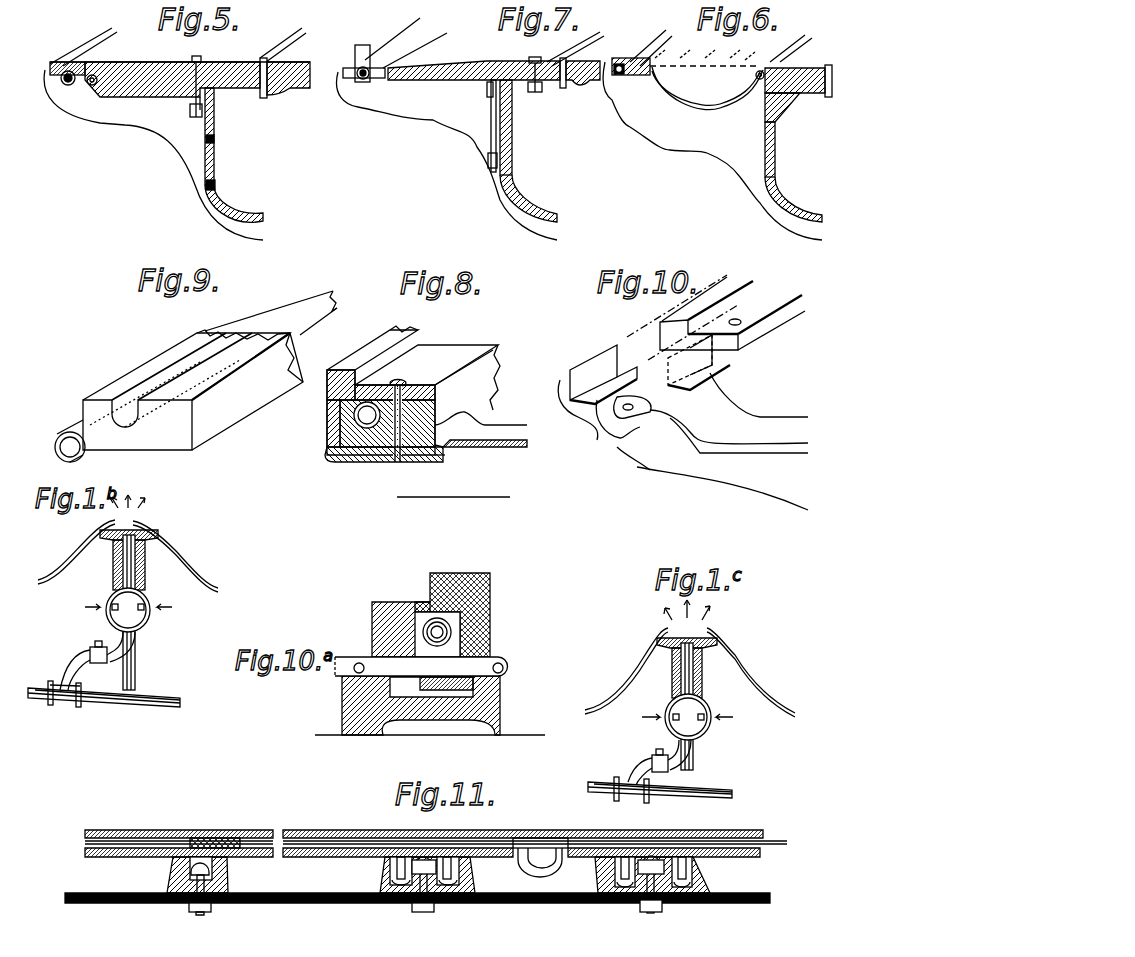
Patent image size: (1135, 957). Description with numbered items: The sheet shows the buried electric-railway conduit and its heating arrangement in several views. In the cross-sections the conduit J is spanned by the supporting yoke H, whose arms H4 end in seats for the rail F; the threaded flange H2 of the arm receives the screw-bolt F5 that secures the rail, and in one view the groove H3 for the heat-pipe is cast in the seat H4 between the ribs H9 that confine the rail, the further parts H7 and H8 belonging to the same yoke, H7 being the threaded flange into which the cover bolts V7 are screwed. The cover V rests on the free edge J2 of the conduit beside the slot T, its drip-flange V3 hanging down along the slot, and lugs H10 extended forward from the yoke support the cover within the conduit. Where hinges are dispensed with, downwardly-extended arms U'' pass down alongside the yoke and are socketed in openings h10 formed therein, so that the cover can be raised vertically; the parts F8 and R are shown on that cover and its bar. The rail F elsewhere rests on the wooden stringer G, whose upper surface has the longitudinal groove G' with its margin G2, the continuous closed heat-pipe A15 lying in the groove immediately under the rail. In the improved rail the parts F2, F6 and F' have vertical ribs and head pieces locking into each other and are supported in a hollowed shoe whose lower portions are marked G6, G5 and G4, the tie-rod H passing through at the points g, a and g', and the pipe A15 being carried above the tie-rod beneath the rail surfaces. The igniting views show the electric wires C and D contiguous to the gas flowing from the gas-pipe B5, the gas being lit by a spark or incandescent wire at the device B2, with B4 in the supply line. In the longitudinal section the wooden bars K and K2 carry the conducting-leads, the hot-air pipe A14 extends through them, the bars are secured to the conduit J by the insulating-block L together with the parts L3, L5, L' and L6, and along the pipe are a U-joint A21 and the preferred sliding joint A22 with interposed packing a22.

In FIG. 5, the rail F is at (83, 45).
In FIG. 6, the rail F is at (651, 47).
In FIG. 10, the rail F is at (716, 317).
In FIG. 10A, the rail F is at (452, 604).
In FIG. 5, the downwardly-extended arms U'' is at (180, 68).
In FIG. 7, the downwardly-extended arms U'' is at (462, 145).
In FIG. 5, the cover bolt V7 is at (206, 74).
In FIG. 7, the cover bolt V7 is at (538, 63).
In FIG. 5, the conduit cover V is at (240, 48).
In FIG. 7, the conduit cover V is at (575, 43).
In FIG. 6, the conduit cover V is at (794, 66).
In FIG. 5, the slot T is at (285, 60).
In FIG. 7, the slot T is at (605, 20).
In FIG. 5, the groove H3 is at (62, 76).
In FIG. 7, the groove H3 is at (370, 85).
In FIG. 10, the groove H3 is at (605, 432).
In FIG. 5, the heat-pipe A15 is at (67, 84).
In FIG. 7, the heat-pipe A15 is at (358, 85).
In FIG. 6, the heat-pipe A15 is at (618, 78).
In FIG. 9, the heat-pipe A15 is at (320, 302).
In FIG. 8, the heat-pipe A15 is at (360, 455).
In FIG. 10A, the heat-pipe A15 is at (440, 630).
In FIG. 5, the threaded flange H7 is at (184, 110).
In FIG. 5, the stud / arm H8 is at (203, 147).
In FIG. 10, the stud / arm H8 is at (729, 413).
In FIG. 5, the free edge of conduit J2 is at (212, 90).
In FIG. 6, the free edge of conduit J2 is at (766, 100).
In FIG. 5, the drip-flange V3 is at (268, 98).
In FIG. 7, the drip-flange V3 is at (572, 88).
In FIG. 6, the drip-flange V3 is at (805, 98).
In FIG. 5, the conduit-yoke H is at (153, 155).
In FIG. 7, the conduit-yoke H is at (430, 128).
In FIG. 6, the conduit-yoke H is at (712, 151).
In FIG. 10, the conduit-yoke H is at (722, 488).
In FIG. 10A, the conduit-yoke H is at (510, 664).
In FIG. 7, the handle F8 is at (395, 50).
In FIG. 7, the rail bar R is at (474, 61).
In FIG. 6, the rail bar R is at (706, 79).
In FIG. 7, the socket openings h10 is at (487, 92).
In FIG. 7, the lugs H10 is at (512, 90).
In FIG. 6, the lugs H10 is at (788, 115).
In FIG. 6, the rail part F6 is at (612, 72).
In FIG. 10A, the rail part F6 is at (443, 630).
In FIG. 6, the yoke arm H4 is at (645, 78).
In FIG. 8, the yoke arm H4 is at (497, 429).
In FIG. 10, the yoke arm H4 is at (570, 403).
In FIG. 6, the conduit J is at (793, 172).
In FIG. 11, the conduit J is at (424, 909).
In FIG. 9, the stringer G is at (193, 390).
In FIG. 8, the stringer G is at (413, 390).
In FIG. 9, the groove G2 is at (190, 372).
In FIG. 8, the groove G2 is at (345, 407).
In FIG. 9, the longitudinal groove G' is at (155, 463).
In FIG. 8, the longitudinal groove G' is at (292, 445).
In FIG. 8, the screw-bolt F5 is at (402, 380).
In FIG. 8, the ribs H9 is at (322, 445).
In FIG. 10, the ribs H9 is at (585, 363).
In FIG. 8, the threaded flange H2 is at (390, 462).
In FIG. 10, the threaded flange H2 is at (640, 460).
In FIG. 1B, the electric wire C is at (35, 565).
In FIG. 10A, the electric wire C is at (562, 711).
In FIG. 1B, the electric wire D is at (142, 558).
In FIG. 1C, the electric wire D is at (700, 680).
In FIG. 1B, the ventilator B2 is at (145, 596).
In FIG. 1C, the ventilator B2 is at (702, 692).
In FIG. 1B, the valve B4 is at (90, 650).
In FIG. 1C, the valve B4 is at (652, 757).
In FIG. 1B, the gas-pipe B5 is at (160, 692).
In FIG. 1C, the gas-pipe B5 is at (728, 776).
In FIG. 10A, the lower block G6 is at (372, 628).
In FIG. 10A, the rail part F' is at (401, 617).
In FIG. 10A, the rail part F2 is at (510, 589).
In FIG. 10A, the pin g is at (352, 652).
In FIG. 10A, the point a is at (329, 640).
In FIG. 10A, the pin g' is at (524, 690).
In FIG. 10A, the foot G5 is at (353, 738).
In FIG. 10A, the arch G4 is at (470, 712).
In FIG. 11, the wooden bar K is at (436, 828).
In FIG. 11, the lower plate K2 is at (422, 833).
In FIG. 11, the hot-air pipe A14 is at (791, 859).
In FIG. 11, the sliding joint A22 is at (226, 832).
In FIG. 11, the packing a22 is at (204, 820).
In FIG. 11, the insulating-block L is at (206, 875).
In FIG. 11, the bolt L3 is at (210, 905).
In FIG. 11, the bracket L5 is at (390, 870).
In FIG. 11, the bracket L' is at (472, 875).
In FIG. 11, the U-joint A21 is at (543, 865).
In FIG. 11, the bracket L6 is at (600, 905).